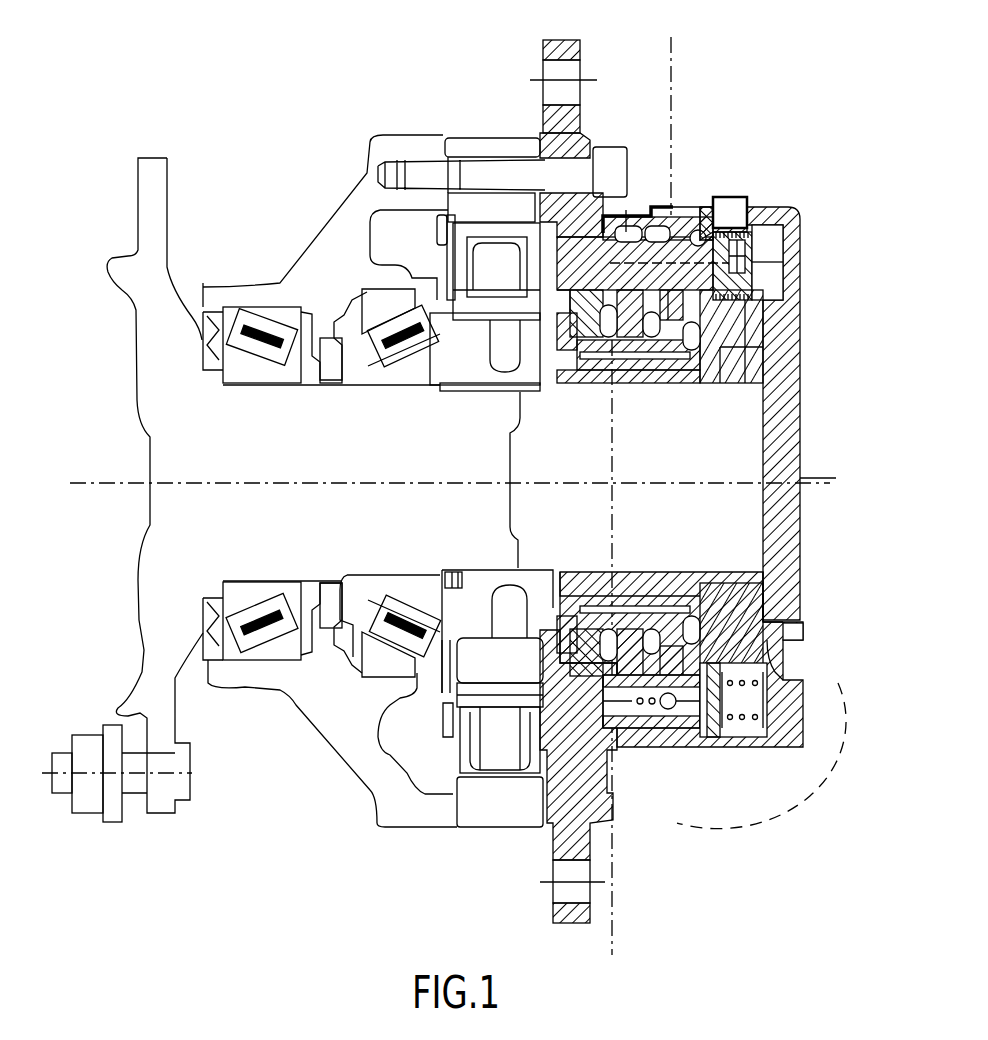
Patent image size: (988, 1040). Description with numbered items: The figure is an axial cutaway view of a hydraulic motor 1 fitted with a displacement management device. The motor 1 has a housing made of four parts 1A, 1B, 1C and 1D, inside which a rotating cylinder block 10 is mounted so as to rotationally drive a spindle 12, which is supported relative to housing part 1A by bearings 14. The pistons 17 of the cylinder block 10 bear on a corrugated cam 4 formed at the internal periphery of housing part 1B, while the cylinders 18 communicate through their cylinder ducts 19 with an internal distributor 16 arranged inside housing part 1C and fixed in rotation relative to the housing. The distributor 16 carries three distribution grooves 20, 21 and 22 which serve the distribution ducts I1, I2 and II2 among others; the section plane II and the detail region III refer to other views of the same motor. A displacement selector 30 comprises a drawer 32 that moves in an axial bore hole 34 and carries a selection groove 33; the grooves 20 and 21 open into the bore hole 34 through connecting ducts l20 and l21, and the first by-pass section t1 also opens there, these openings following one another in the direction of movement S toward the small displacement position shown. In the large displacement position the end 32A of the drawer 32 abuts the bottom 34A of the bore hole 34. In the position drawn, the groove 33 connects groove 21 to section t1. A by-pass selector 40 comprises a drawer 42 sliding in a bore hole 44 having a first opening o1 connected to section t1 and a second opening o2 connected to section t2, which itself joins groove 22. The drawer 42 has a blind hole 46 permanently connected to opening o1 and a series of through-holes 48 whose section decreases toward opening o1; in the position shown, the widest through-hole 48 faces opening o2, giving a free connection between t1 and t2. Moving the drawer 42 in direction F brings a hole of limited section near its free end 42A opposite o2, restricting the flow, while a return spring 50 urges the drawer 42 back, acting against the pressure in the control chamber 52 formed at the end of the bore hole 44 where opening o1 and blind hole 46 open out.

The motor 1 is at (320, 106).
The housing part 1A is at (341, 214).
The housing part 1B is at (492, 138).
The housing part 1C is at (580, 119).
The housing part 1D is at (805, 440).
The corrugated cam 4 is at (437, 232).
The rotating cylinder block 10 is at (457, 356).
The spindle 12 is at (324, 451).
The bearings 14 is at (259, 384).
The internal distributor 16 is at (656, 578).
The pistons 17 is at (483, 306).
The cylinders 18 is at (455, 266).
The cylinder ducts 19 is at (485, 389).
The distribution groove 20 is at (712, 330).
The distribution groove 21 is at (648, 345).
The distribution groove 22 is at (614, 340).
The displacement selector 30 is at (629, 226).
The drawer 32 is at (674, 232).
The selection groove 33 is at (633, 218).
The axial bore hole 34 is at (718, 235).
The end of the drawer 32A is at (758, 212).
The bottom of the bore hole 34A is at (778, 240).
The by-pass selector 40 is at (705, 747).
The drawer 42 is at (736, 745).
The free end of the drawer 42A is at (594, 692).
The bore hole 44 is at (656, 735).
The blind hole 46 is at (592, 791).
The through-holes 48 is at (774, 623).
The return spring 50 is at (760, 745).
The control chamber 52 is at (577, 733).
The first connecting section of by-pass t1 is at (597, 230).
The second connecting section of by-pass t2 is at (620, 588).
The first opening o1 is at (612, 784).
The second opening o2 is at (702, 580).
The distribution ducts of the first group of the first series I1 is at (581, 378).
The distribution ducts of the second group of the first series I2 is at (582, 597).
The distribution ducts of the second group of the second series II2 is at (662, 576).
The connecting duct l20 is at (762, 318).
The connecting duct l21 is at (668, 330).
The direction of movement S is at (752, 158).
The direction of movement F is at (790, 690).
The section II is at (671, 56).
The detail III is at (750, 817).